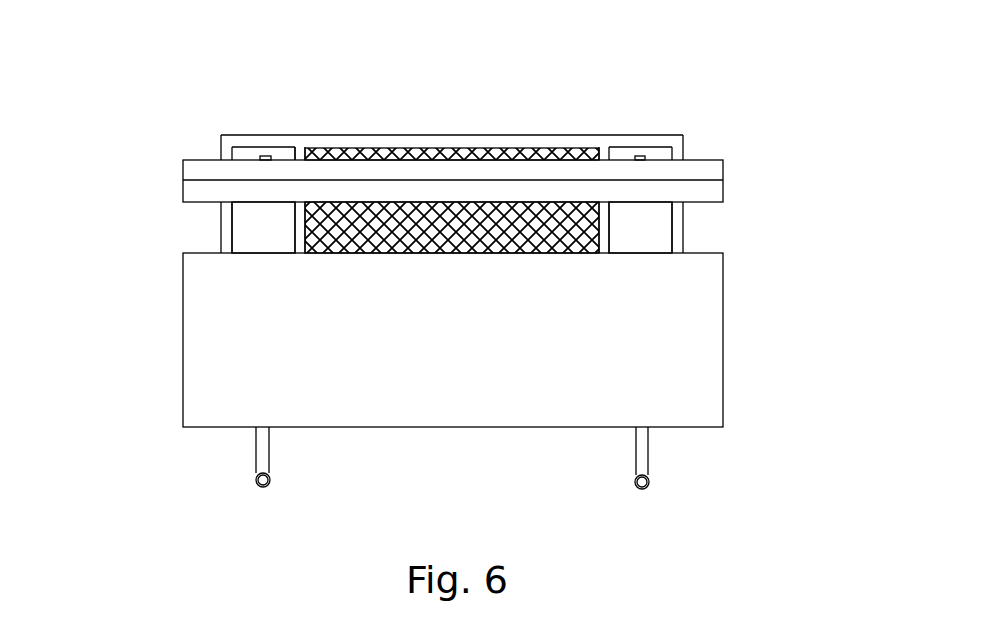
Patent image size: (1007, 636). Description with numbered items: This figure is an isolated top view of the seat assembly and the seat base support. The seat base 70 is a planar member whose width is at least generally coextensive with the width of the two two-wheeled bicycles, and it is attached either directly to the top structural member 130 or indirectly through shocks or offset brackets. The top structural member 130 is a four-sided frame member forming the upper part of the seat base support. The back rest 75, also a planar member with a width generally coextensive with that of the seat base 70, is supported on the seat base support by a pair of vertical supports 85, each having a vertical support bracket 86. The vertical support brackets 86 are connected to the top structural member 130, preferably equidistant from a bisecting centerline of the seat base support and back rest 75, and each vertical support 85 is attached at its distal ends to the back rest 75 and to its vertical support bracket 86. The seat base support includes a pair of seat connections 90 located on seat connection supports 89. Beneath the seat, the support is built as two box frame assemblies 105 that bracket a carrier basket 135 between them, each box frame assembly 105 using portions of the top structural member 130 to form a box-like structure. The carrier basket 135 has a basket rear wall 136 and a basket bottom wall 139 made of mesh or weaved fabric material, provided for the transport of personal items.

The seat base 70 is at (707, 378).
The back rest 75 is at (705, 195).
The vertical support 85 is at (262, 157).
The vertical support bracket 86 is at (262, 204).
The seat connection support 89 is at (267, 443).
The seat connection 90 is at (268, 487).
The box frame assembly 105 is at (237, 232).
The top structural member 130 is at (685, 142).
The carrier basket 135 is at (447, 206).
The basket rear wall 136 is at (295, 155).
The basket bottom wall 139 is at (522, 147).